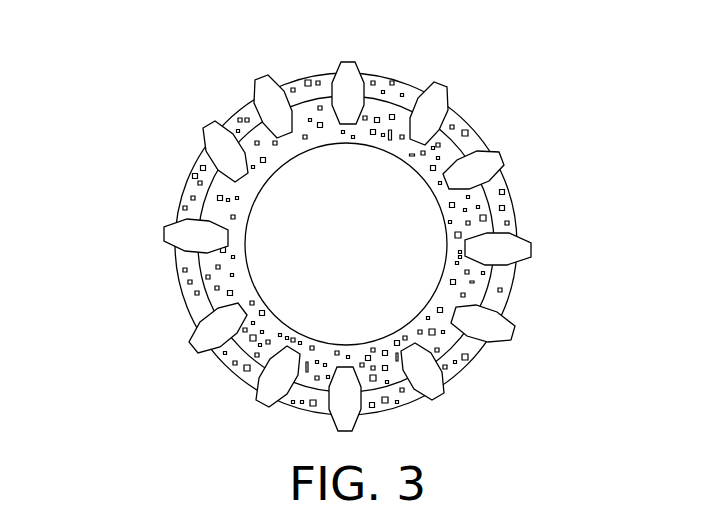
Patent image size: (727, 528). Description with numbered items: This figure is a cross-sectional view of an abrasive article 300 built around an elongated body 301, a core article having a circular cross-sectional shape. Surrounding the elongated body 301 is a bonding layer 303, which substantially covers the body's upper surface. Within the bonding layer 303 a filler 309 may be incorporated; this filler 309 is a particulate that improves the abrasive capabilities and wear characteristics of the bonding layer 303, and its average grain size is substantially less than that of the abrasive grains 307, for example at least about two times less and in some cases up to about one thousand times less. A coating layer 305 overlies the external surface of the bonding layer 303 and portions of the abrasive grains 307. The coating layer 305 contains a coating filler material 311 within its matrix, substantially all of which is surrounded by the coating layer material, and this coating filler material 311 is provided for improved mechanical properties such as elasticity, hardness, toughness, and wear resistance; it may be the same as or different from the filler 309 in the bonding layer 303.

The abrasive article 300 is at (352, 224).
The elongated body 301 is at (364, 255).
The bonding layer 303 is at (483, 277).
The coating layer 305 is at (505, 197).
The abrasive grains 307 is at (487, 152).
The filler 309 is at (320, 103).
The coating filler material 311 is at (180, 270).